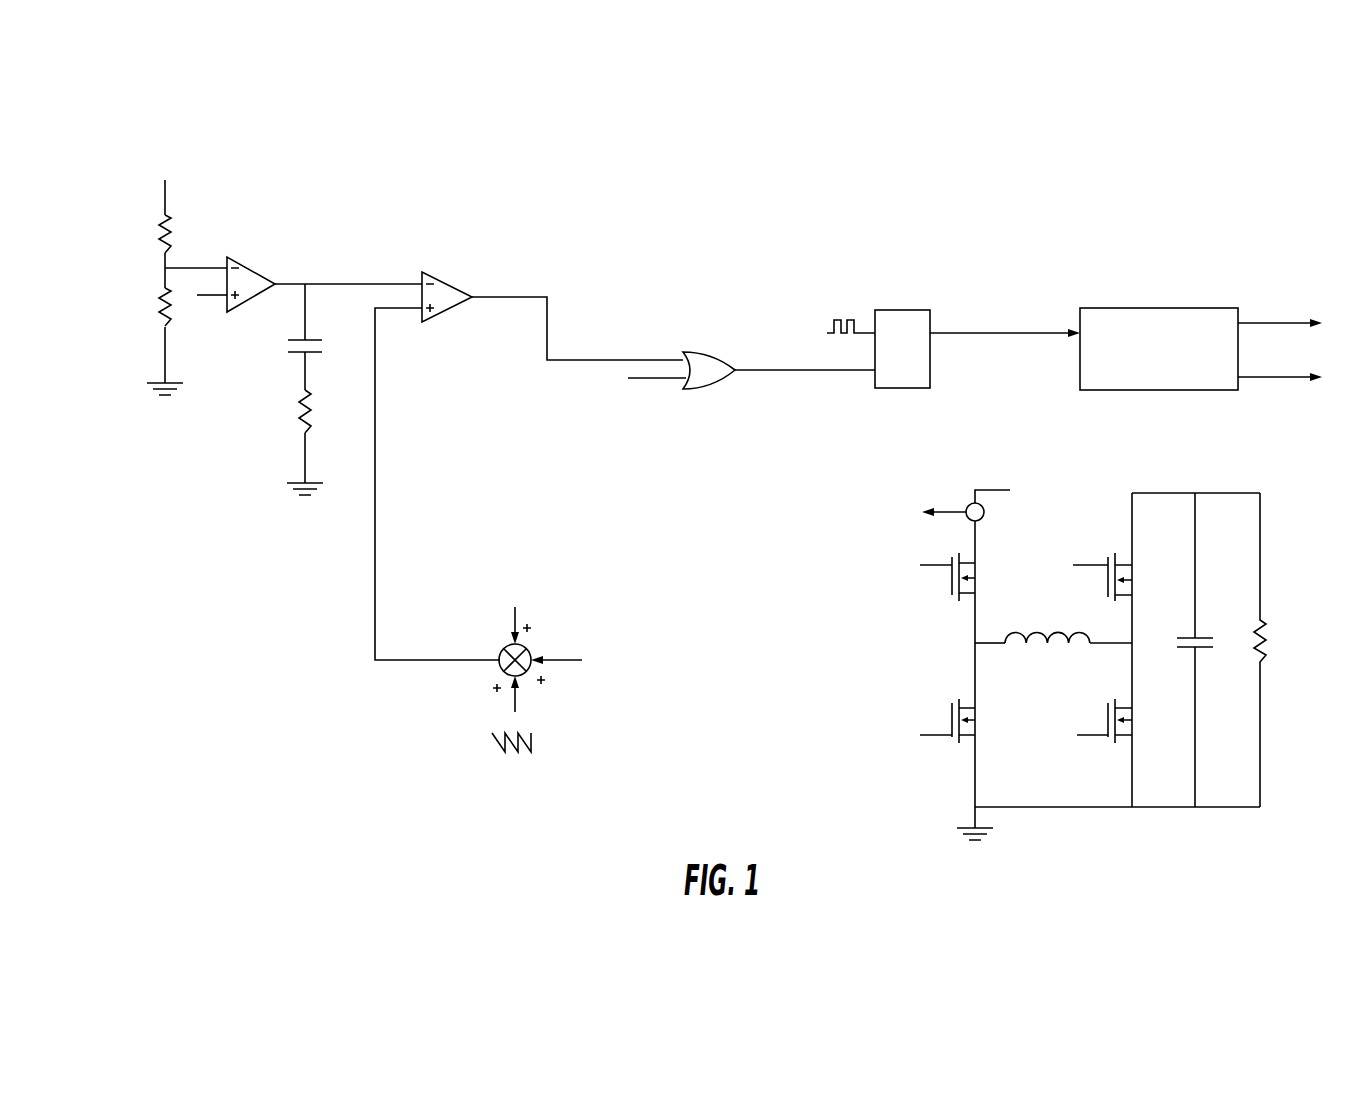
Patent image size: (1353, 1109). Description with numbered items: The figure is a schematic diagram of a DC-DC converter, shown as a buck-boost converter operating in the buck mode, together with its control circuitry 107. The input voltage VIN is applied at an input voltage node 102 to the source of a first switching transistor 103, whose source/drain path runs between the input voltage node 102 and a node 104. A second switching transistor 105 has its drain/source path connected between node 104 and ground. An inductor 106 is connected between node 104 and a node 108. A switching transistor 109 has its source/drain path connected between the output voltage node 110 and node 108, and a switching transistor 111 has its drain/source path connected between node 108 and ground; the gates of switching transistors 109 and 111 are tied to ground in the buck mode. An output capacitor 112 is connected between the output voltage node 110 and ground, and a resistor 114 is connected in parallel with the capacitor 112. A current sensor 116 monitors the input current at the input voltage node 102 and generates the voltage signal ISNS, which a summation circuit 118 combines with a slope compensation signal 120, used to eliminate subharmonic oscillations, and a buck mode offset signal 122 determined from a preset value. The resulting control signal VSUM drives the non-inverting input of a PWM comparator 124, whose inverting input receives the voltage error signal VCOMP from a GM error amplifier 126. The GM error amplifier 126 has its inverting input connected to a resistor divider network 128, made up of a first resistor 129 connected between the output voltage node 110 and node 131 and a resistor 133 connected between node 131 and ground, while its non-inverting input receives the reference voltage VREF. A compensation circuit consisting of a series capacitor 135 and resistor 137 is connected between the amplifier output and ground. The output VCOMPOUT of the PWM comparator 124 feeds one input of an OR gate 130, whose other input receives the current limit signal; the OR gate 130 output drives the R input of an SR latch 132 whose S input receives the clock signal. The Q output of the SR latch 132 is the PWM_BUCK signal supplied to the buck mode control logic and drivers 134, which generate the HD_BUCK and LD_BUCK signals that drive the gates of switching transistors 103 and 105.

The input voltage node 102 is at (1010, 490).
The first switching transistor 103 is at (950, 575).
The node 104 is at (975, 643).
The second switching transistor 105 is at (957, 745).
The inductor 106 is at (1022, 637).
The control circuitry 107 is at (678, 242).
The node 108 is at (1135, 645).
The switching transistor 109 is at (1133, 585).
The output voltage node 110 is at (1258, 493).
The switching transistor 111 is at (1122, 720).
The output capacitor 112 is at (1210, 650).
The resistor 114 is at (1290, 642).
The current sensor 116 is at (965, 505).
The summation circuit 118 is at (525, 647).
The slope compensation signal 120 is at (515, 758).
The buck mode offset signal 122 is at (510, 598).
The PWM comparator 124 is at (450, 312).
The GM error amplifier 126 is at (272, 281).
The resistor divider network 128 is at (138, 272).
The first resistor 129 is at (158, 220).
The OR gate 130 is at (695, 389).
The node 131 is at (170, 262).
The SR latch 132 is at (903, 310).
The resistor 133 is at (155, 327).
The buck mode control logic and drivers 134 is at (1105, 308).
The capacitor 135 is at (323, 347).
The resistor 137 is at (300, 435).